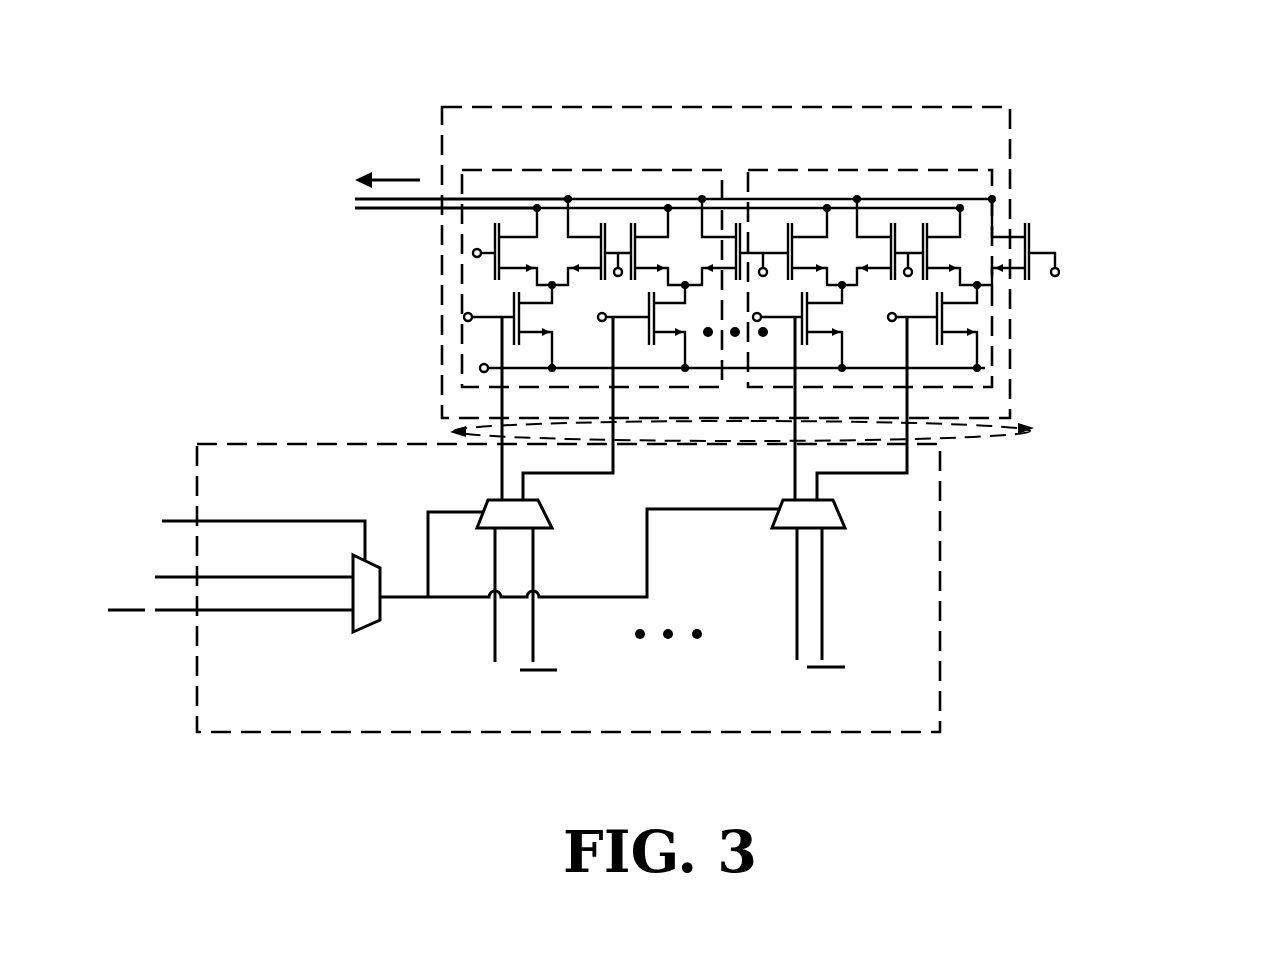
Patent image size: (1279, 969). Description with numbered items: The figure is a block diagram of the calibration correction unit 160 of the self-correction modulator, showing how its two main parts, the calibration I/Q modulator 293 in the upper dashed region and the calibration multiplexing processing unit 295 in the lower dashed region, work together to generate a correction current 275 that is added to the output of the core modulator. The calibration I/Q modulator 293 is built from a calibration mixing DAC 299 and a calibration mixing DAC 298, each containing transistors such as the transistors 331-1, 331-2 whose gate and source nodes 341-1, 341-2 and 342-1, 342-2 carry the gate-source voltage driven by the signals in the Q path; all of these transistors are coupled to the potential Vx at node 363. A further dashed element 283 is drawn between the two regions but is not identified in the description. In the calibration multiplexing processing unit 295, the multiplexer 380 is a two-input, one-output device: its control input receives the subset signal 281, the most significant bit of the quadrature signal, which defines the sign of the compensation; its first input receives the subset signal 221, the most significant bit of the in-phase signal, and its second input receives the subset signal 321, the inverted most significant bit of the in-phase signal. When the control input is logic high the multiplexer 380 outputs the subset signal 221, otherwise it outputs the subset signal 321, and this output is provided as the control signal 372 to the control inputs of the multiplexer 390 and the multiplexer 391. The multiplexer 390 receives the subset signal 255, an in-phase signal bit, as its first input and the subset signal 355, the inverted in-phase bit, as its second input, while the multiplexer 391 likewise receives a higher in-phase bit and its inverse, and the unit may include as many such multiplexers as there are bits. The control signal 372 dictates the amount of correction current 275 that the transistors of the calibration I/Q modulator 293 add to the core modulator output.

The calibration correction unit 160 is at (1194, 60).
The correction current 275 is at (397, 178).
The transistor 331-1 is at (498, 224).
The transistor 331-2 is at (632, 224).
The node 341-1 is at (474, 251).
The node 341-2 is at (615, 248).
The node 342-1 is at (520, 270).
The node 342-2 is at (657, 265).
The node 363 is at (485, 371).
The calibration mixing DAC 298 is at (993, 324).
The calibration mixing DAC 299 is at (461, 388).
The calibration I/Q modulator 293 is at (1010, 388).
The bit line path 283 is at (1007, 437).
The calibration multiplexing processing unit 295 is at (848, 732).
The subset signal 281 is at (163, 519).
The subset signal 221 is at (257, 576).
The subset signal 321 is at (240, 611).
The control signal 372 is at (427, 537).
The multiplexer 380 is at (381, 622).
The multiplexer 390 is at (488, 500).
The multiplexer 391 is at (783, 499).
The subset signal 255 is at (494, 648).
The subset signal 355 is at (534, 622).